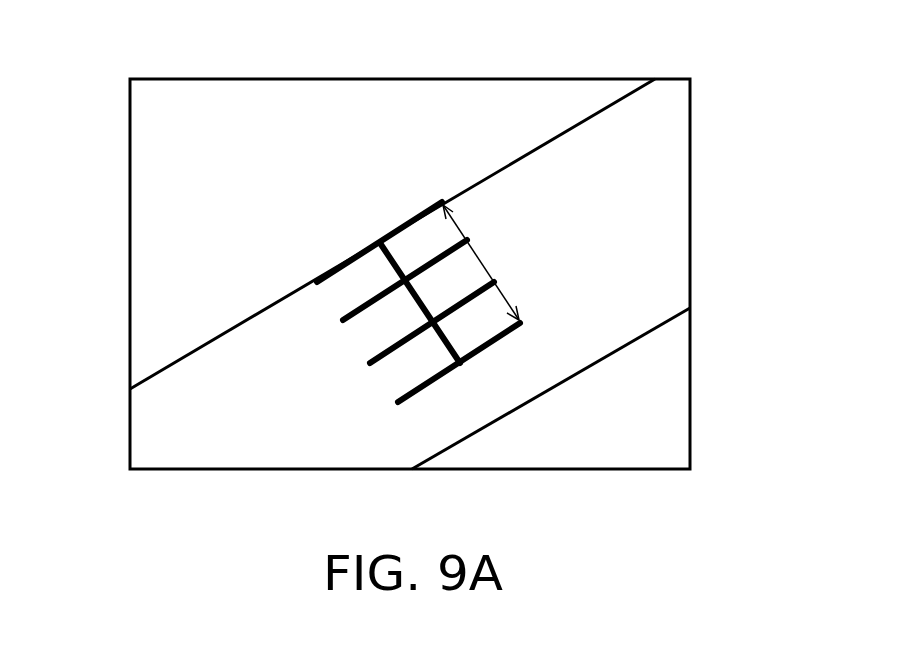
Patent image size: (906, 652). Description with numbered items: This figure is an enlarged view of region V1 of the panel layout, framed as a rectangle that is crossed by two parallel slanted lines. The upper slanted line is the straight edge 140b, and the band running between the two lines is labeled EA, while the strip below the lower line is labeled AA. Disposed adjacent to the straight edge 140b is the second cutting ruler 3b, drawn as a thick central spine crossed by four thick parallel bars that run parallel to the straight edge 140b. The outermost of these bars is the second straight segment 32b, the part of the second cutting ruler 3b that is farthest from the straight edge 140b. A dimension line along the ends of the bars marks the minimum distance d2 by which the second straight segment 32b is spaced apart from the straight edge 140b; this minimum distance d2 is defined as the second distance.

The region V1 is at (130, 143).
The straight edge 140b is at (538, 147).
The extended area EA is at (642, 267).
The active area AA is at (642, 422).
The second straight segment 32b is at (421, 396).
The second cutting ruler 3b is at (465, 372).
The minimum distance d2 is at (481, 262).